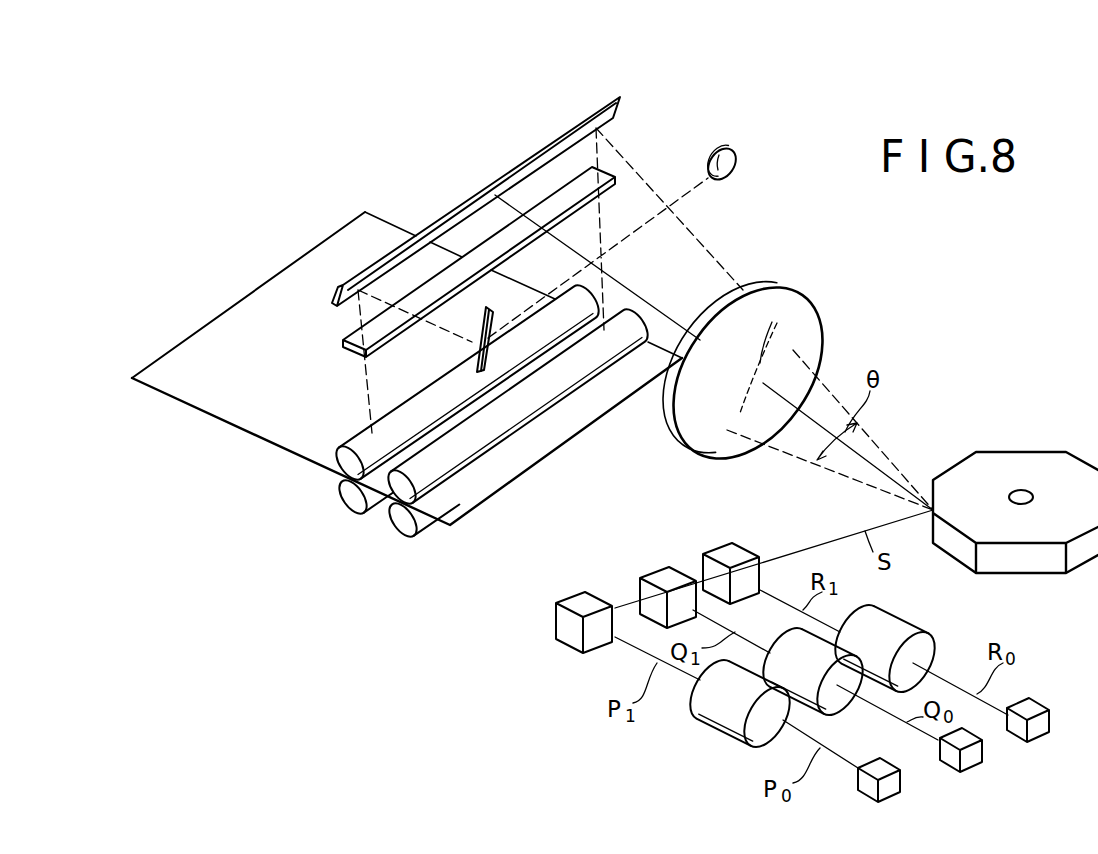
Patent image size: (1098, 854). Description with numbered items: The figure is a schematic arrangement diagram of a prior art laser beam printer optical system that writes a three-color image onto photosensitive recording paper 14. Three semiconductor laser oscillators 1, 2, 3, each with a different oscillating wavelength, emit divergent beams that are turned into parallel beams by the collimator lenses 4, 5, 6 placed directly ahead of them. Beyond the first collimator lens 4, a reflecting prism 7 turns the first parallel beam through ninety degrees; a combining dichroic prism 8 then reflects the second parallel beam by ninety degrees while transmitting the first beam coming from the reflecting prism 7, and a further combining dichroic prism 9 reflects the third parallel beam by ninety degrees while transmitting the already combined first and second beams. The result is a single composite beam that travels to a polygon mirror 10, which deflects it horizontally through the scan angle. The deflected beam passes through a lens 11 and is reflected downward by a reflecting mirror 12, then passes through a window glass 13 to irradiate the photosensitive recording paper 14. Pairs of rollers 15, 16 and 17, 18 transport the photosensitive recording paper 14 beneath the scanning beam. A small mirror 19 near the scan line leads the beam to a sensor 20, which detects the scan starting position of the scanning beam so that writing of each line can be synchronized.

The first semiconductor laser oscillator 1 is at (902, 797).
The second semiconductor laser oscillator 2 is at (972, 765).
The third semiconductor laser oscillator 3 is at (1038, 740).
The collimator lens 4 is at (720, 722).
The collimator lens 5 is at (807, 712).
The collimator lens 6 is at (903, 632).
The reflecting prism 7 is at (558, 637).
The combining dichroic prism 8 is at (657, 575).
The combining dichroic prism 9 is at (727, 543).
The polygon mirror 10 is at (1020, 453).
The lens 11 is at (815, 338).
The reflecting mirror 12 is at (553, 148).
The window glass 13 is at (612, 172).
The photosensitive recording paper 14 is at (226, 405).
The roller 15 is at (353, 440).
The roller 16 is at (353, 503).
The roller 17 is at (455, 455).
The roller 18 is at (403, 527).
The mirror 19 is at (470, 345).
The sensor 20 is at (740, 158).